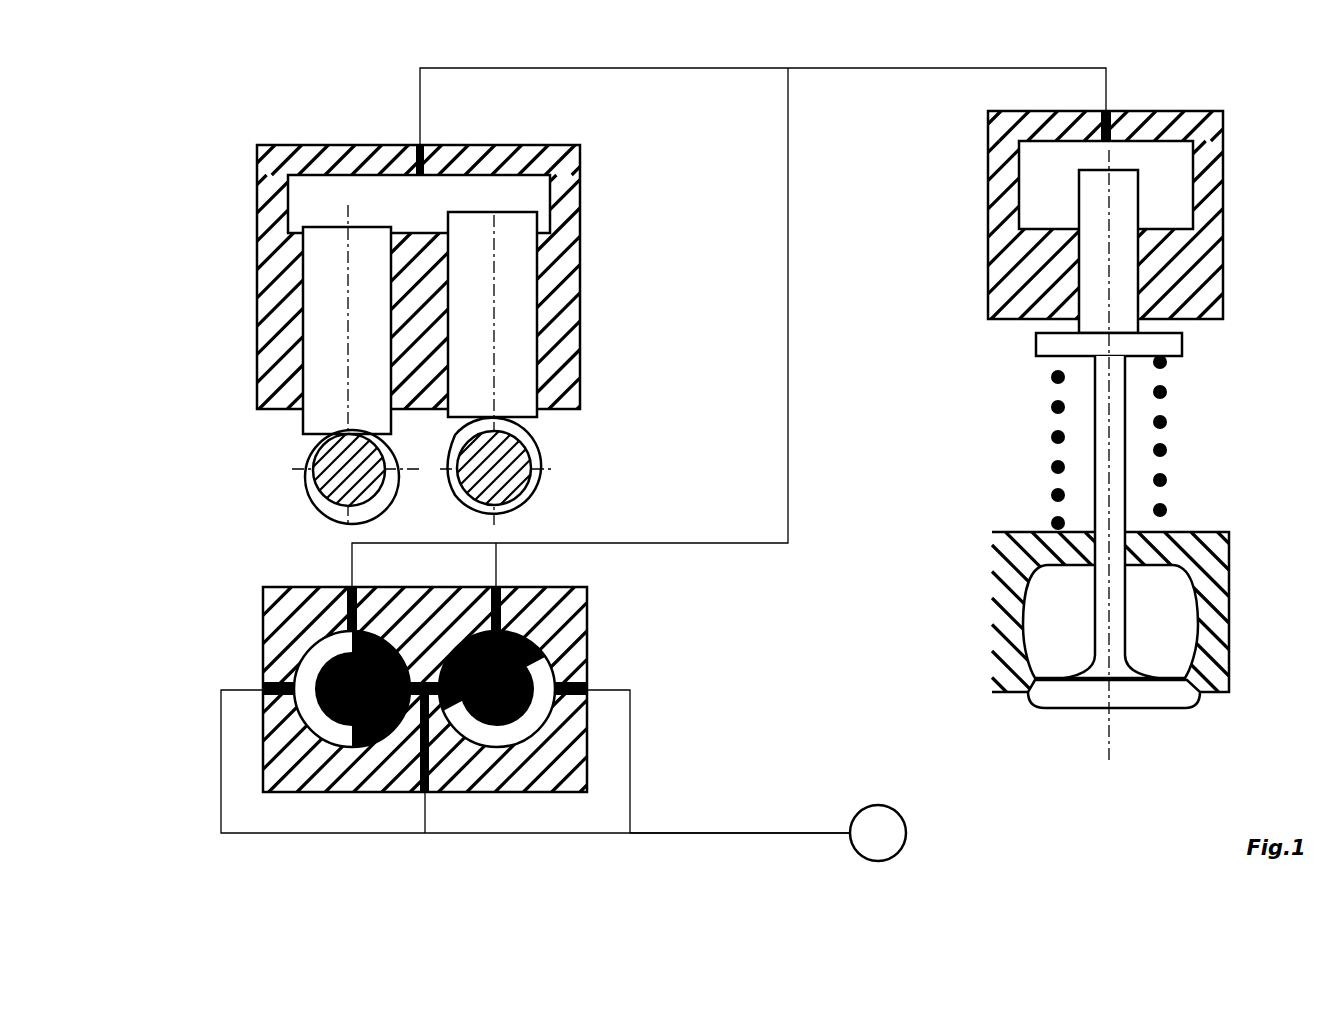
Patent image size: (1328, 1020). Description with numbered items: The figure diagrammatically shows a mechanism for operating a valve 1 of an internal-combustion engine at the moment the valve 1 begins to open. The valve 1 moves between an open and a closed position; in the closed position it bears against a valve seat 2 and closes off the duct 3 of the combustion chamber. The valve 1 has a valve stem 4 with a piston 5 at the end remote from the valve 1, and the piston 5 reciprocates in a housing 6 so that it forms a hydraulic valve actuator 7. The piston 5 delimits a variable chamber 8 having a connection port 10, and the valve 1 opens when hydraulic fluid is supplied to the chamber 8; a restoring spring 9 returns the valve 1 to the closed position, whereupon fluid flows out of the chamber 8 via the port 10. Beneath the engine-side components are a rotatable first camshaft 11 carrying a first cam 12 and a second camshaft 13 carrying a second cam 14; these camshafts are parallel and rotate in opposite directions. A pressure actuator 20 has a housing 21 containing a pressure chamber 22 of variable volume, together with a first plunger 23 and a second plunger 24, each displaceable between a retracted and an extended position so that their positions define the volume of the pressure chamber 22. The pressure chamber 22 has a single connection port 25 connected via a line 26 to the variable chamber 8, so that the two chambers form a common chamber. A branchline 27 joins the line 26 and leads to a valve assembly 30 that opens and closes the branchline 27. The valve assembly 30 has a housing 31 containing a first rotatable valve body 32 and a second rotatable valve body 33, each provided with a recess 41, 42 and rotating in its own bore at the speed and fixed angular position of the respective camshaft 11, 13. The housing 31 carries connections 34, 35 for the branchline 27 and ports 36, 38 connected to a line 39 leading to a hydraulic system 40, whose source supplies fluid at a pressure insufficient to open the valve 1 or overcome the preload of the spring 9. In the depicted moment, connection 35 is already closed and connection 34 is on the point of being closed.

The valve 1 is at (1129, 456).
The valve seat 2 is at (1025, 697).
The duct 3 is at (1145, 622).
The valve stem 4 is at (1122, 602).
The piston 5 is at (1127, 290).
The housing 6 is at (1212, 205).
The hydraulic valve actuator 7 is at (1148, 201).
The variable chamber 8 is at (1128, 155).
The restoring spring 9 is at (1168, 393).
The connection port 10 is at (1103, 110).
The first camshaft 11 is at (330, 465).
The first cam 12 is at (338, 510).
The second camshaft 13 is at (515, 500).
The second cam 14 is at (520, 445).
The pressure actuator 20 is at (383, 311).
The housing 21 is at (580, 292).
The pressure chamber 22 is at (427, 205).
The first plunger 23 is at (340, 335).
The second plunger 24 is at (503, 325).
The connection port 25 is at (416, 145).
The line 26 is at (670, 70).
The branchline 27 is at (793, 485).
The valve assembly 30 is at (472, 698).
The housing 31 is at (350, 625).
The first rotatable valve body 32 is at (330, 643).
The second rotatable valve body 33 is at (545, 640).
The connection 34 is at (348, 587).
The connection 35 is at (500, 587).
The port 36 is at (262, 690).
The port 38 is at (590, 690).
The line 39 is at (798, 833).
The hydraulic system 40 is at (882, 806).
The recess 41 is at (305, 690).
The recess 42 is at (520, 720).